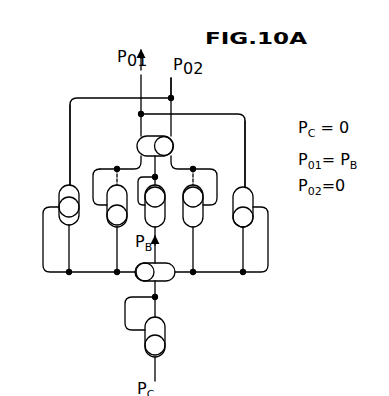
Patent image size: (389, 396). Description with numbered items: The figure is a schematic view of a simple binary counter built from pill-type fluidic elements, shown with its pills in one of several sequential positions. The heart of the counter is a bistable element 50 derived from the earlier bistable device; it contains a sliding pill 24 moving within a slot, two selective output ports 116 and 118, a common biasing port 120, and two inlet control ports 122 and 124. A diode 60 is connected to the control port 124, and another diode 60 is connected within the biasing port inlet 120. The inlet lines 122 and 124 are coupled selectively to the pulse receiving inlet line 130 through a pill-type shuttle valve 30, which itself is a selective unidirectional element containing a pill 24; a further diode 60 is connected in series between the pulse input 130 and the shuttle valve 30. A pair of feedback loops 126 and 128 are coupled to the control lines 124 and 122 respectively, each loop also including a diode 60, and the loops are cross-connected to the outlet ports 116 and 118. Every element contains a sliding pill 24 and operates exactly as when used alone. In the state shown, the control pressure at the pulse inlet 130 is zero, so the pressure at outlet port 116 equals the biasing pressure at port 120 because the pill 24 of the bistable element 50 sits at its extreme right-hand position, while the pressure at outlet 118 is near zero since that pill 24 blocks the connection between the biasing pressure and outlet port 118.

The selective output port 116 is at (138, 87).
The selective output port 118 is at (172, 86).
The common biasing port 120 is at (138, 163).
The inlet control port 122 is at (116, 268).
The inlet control port 124 is at (194, 260).
The feedback loop 126 is at (245, 162).
The feedback loop 128 is at (70, 124).
The pulse receiving inlet line 130 is at (155, 372).
The sliding pill 24 is at (170, 142).
The bistable element 50 is at (171, 148).
The pill-type shuttle valve 30 is at (166, 283).
The diode 60 is at (162, 263).